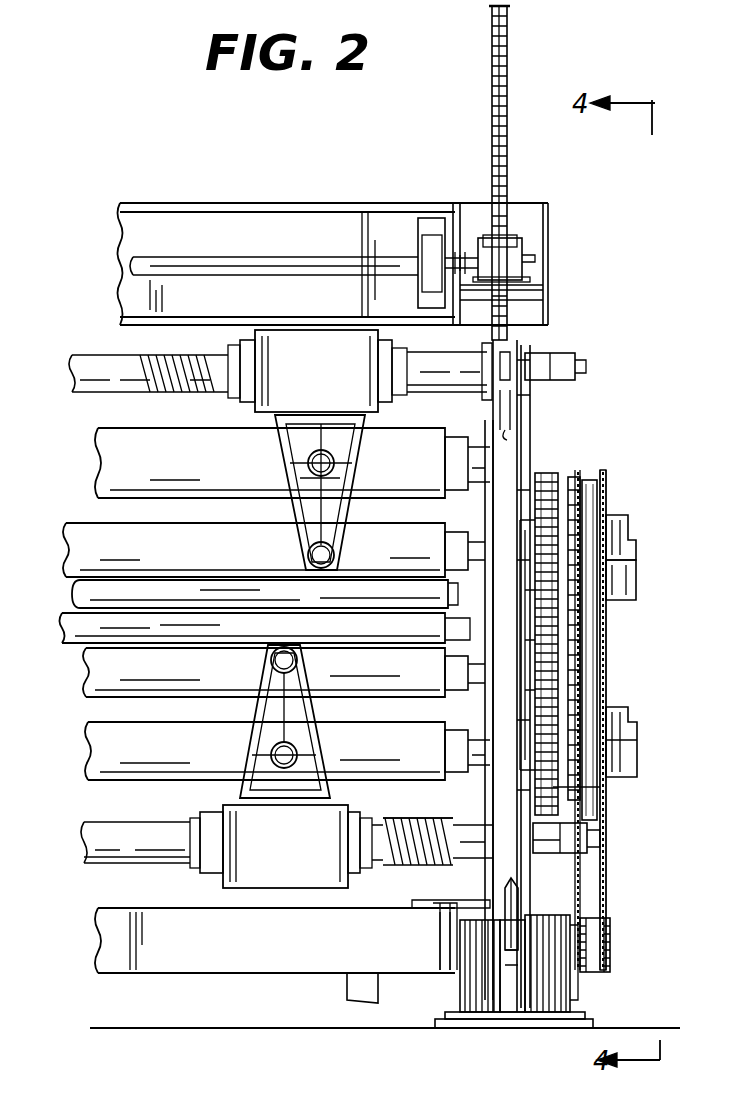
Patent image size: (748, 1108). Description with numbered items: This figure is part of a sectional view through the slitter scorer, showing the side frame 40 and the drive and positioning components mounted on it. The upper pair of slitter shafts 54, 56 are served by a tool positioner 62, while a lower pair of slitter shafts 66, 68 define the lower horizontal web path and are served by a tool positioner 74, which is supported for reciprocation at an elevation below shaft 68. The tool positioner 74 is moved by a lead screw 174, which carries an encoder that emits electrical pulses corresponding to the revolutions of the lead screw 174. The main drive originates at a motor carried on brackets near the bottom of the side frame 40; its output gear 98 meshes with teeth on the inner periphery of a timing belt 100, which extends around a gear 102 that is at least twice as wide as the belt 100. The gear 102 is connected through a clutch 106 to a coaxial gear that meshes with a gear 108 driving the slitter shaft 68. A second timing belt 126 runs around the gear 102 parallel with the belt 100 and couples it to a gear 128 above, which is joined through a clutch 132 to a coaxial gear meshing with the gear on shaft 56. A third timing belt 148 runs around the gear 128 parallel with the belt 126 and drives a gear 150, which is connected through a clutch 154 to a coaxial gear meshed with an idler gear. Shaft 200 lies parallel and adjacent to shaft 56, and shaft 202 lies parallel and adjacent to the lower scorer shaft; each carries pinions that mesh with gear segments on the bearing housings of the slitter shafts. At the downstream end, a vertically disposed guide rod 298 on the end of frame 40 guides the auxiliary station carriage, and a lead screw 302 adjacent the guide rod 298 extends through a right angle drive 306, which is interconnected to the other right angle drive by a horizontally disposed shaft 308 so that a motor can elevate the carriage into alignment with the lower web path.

The lead screw 302 is at (491, 103).
The horizontally disposed shaft 308 is at (258, 232).
The right angle drive 306 is at (520, 262).
The tool positioner 62 is at (278, 371).
The slitter shaft 54 is at (97, 448).
The left side frame 40 is at (500, 450).
The second timing belt 126 is at (566, 478).
The gear 128 is at (602, 486).
The slitter shaft 56 is at (82, 522).
The clutch 132 is at (622, 532).
The shaft 200 is at (148, 592).
The clutch 154 is at (622, 584).
The third timing belt 148 is at (590, 646).
The gear 150 is at (606, 652).
The slitter shaft 66 is at (85, 678).
The shaft 202 is at (220, 632).
The clutch 106 is at (625, 738).
The slitter shaft 68 is at (88, 755).
The gear 108 is at (600, 787).
The lead screw 174 is at (444, 818).
The tool positioner 74 is at (287, 846).
The gear 102 is at (600, 812).
The guide rod 298 is at (504, 893).
The timing belt 100 is at (598, 892).
The output gear 98 is at (610, 965).